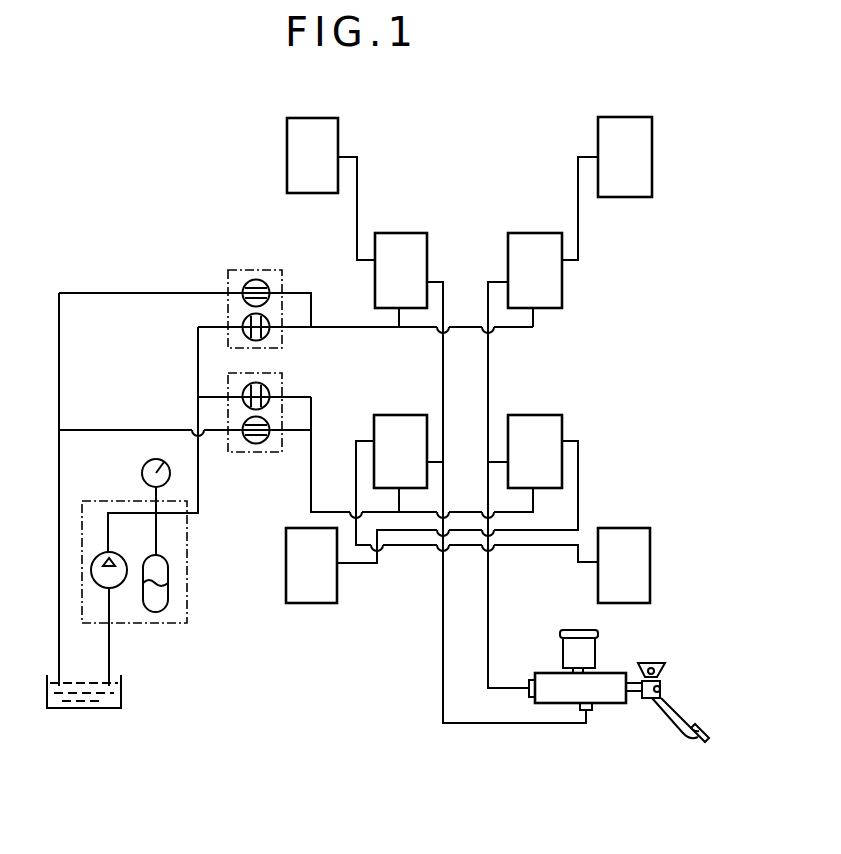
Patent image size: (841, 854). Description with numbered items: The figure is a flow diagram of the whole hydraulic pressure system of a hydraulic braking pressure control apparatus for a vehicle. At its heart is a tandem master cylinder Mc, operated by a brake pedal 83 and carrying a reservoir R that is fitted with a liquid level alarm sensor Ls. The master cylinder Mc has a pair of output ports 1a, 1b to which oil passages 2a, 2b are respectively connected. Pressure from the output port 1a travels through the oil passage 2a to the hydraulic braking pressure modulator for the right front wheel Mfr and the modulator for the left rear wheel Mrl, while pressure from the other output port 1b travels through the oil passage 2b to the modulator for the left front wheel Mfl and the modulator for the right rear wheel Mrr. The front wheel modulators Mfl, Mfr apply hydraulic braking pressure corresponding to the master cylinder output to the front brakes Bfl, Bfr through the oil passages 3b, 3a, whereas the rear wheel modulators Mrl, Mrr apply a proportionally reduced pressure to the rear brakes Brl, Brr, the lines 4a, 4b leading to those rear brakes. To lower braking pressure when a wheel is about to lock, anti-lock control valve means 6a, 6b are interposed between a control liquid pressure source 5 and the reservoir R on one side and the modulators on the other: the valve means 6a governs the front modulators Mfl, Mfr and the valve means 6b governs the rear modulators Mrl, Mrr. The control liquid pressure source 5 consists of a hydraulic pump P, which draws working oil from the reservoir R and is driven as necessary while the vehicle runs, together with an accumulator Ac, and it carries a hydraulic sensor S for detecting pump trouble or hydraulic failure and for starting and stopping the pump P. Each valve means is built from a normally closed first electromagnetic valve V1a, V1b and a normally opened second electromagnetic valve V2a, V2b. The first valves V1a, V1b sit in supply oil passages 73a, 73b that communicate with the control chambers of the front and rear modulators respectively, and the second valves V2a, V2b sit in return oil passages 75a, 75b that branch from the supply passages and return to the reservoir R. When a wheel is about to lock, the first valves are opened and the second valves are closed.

The brake for left front wheel Bfl is at (311, 170).
The brake for right front wheel Bfr is at (621, 170).
The hydraulic braking pressure modulator for left front wheel Mfl is at (401, 285).
The hydraulic braking pressure modulator for right front wheel Mfr is at (534, 285).
The hydraulic braking pressure modulator for right rear wheel Mrr is at (400, 467).
The hydraulic braking pressure modulator for left rear wheel Mrl is at (534, 467).
The brake for left rear wheel Brl is at (308, 580).
The brake for right rear wheel Brr is at (620, 580).
The oil passage 3b is at (357, 222).
The oil passage 3a is at (578, 222).
The oil passage 2b is at (443, 600).
The oil passage 2a is at (488, 600).
The supply oil passage 73a is at (379, 327).
The supply oil passage 73b is at (311, 470).
The rear left brake line 4a is at (362, 563).
The rear right brake line 4b is at (538, 545).
The return oil passage 75a is at (105, 293).
The return oil passage 75b is at (108, 430).
The anti-lock control valve means 6a is at (268, 270).
The anti-lock control valve means 6b is at (270, 452).
The second electromagnetic valve V2a is at (244, 285).
The first electromagnetic valve V1a is at (267, 332).
The first electromagnetic valve V1b is at (268, 391).
The second electromagnetic valve V2b is at (246, 440).
The control liquid pressure source 5 is at (187, 541).
The hydraulic pump P is at (97, 561).
The hydraulic sensor S is at (142, 471).
The accumulator Ac is at (168, 577).
The reservoir R is at (122, 693).
The tandem master cylinder Mc is at (609, 673).
The liquid level alarm sensor Ls is at (592, 646).
The output port 1a is at (528, 690).
The output port 1b is at (590, 711).
The brake pedal 83 is at (703, 727).